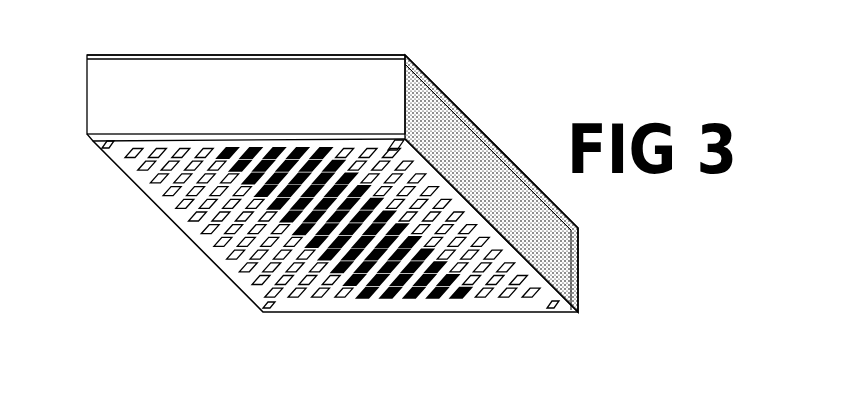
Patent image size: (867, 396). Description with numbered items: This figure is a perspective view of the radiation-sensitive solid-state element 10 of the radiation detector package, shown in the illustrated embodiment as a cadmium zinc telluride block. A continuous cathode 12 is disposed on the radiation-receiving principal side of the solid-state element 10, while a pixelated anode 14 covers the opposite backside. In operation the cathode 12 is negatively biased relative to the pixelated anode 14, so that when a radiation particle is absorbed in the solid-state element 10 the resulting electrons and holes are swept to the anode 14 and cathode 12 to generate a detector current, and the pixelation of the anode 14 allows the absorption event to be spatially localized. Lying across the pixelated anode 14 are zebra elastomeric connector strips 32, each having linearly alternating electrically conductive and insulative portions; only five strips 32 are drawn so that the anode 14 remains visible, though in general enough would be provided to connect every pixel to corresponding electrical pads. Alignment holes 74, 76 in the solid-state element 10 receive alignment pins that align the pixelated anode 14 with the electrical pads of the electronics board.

The radiation-sensitive solid-state element 10 is at (260, 112).
The cathode 12 is at (250, 57).
The pixelated anode 14 is at (223, 245).
The zebra elastomeric connector strips 32 is at (383, 310).
The alignment hole 74 is at (100, 151).
The alignment hole 76 is at (398, 153).